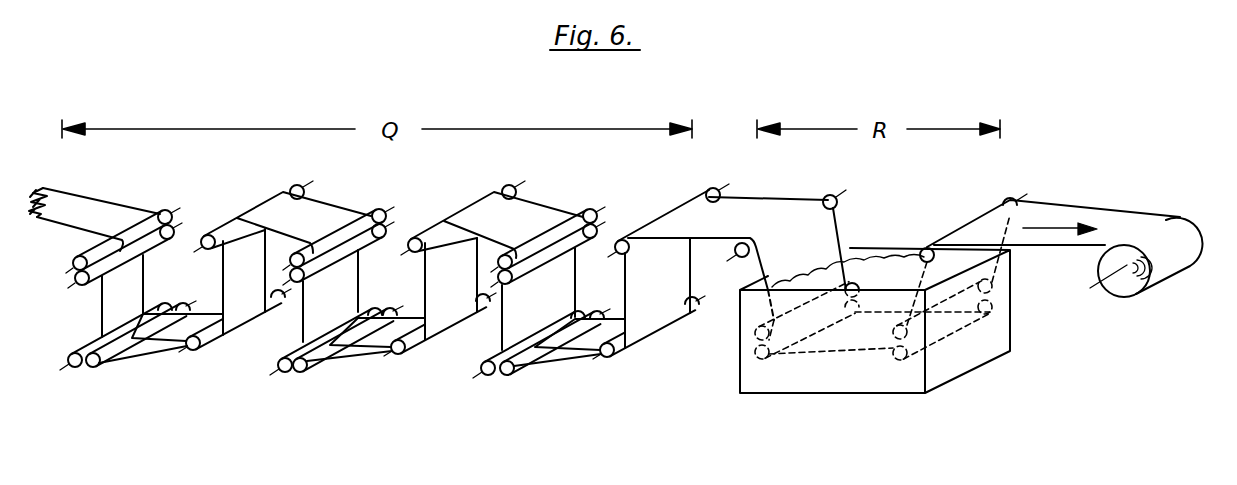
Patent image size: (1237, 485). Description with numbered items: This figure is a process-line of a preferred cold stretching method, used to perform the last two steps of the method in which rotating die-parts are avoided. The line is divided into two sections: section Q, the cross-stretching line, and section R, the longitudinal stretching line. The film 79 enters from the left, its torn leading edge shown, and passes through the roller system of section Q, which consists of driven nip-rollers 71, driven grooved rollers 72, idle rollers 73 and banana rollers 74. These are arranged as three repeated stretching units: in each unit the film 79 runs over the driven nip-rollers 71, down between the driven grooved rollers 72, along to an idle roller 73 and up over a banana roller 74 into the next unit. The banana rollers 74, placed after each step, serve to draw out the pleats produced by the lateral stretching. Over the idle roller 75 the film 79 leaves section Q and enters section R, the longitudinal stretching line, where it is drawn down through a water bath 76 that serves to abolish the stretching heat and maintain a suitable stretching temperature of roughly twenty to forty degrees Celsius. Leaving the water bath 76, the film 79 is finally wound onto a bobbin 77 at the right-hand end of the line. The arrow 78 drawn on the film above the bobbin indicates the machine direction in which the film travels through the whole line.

The driven nip-rollers 71 is at (169, 209).
The driven grooved rollers 72 is at (95, 369).
The idle rollers 73 is at (196, 352).
The banana rollers 74 is at (301, 186).
The idle roller 75 is at (834, 196).
The water bath 76 is at (961, 369).
The bobbin 77 is at (1120, 289).
The arrow 78 is at (1058, 227).
The film 79 is at (107, 211).